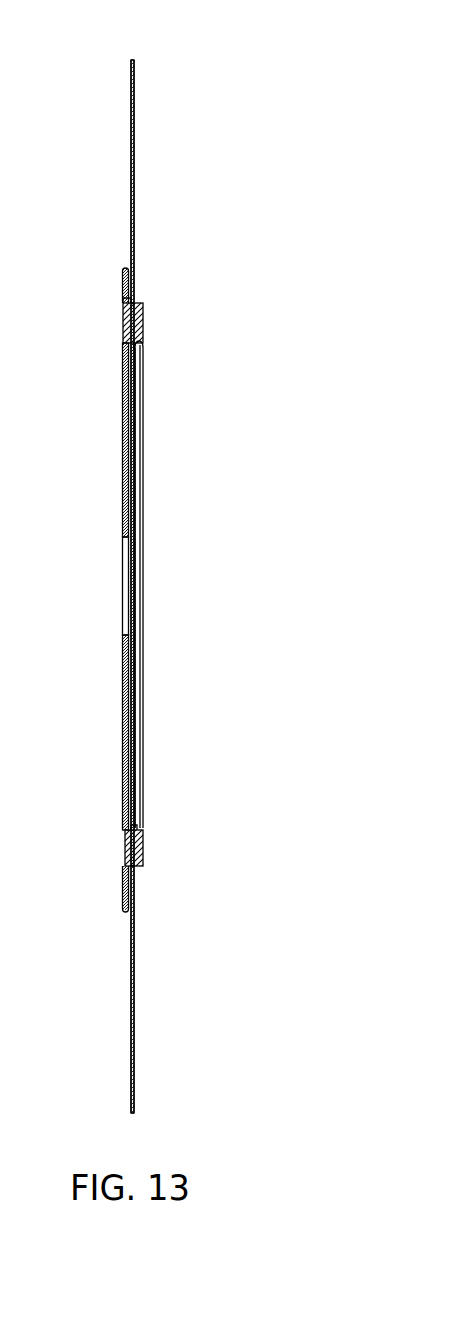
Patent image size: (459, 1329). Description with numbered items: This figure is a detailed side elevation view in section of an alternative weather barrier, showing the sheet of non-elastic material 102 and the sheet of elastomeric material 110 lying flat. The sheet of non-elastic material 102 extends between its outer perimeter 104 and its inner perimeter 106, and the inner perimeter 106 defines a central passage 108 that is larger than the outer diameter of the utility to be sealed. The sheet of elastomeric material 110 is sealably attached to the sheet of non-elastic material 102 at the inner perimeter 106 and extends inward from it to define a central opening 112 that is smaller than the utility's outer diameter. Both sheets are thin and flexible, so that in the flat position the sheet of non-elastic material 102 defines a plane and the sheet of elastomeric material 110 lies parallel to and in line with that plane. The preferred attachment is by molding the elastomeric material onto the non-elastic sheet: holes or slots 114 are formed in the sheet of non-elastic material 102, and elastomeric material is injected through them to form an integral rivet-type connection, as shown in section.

The sheet of non-elastic material 102 is at (134, 180).
The outer perimeter 104 is at (134, 60).
The inner perimeter 106 is at (142, 373).
The central passage 108 is at (127, 791).
The sheet of elastomeric material 110 is at (127, 441).
The central opening 112 is at (127, 535).
The holes or slots 114 is at (143, 300).